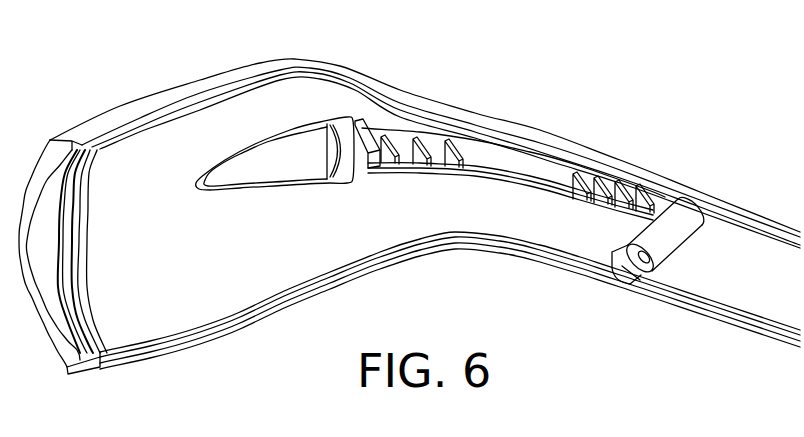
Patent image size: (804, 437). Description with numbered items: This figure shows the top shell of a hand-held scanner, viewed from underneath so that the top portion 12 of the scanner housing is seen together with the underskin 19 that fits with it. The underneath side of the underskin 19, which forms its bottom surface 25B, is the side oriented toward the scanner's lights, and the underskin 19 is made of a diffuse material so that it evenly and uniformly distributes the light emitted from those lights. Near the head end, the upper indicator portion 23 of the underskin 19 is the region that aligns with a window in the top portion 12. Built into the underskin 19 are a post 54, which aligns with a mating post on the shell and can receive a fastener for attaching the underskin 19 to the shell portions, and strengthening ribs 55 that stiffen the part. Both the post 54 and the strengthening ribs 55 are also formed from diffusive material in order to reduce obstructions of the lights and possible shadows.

The top portion 12 is at (115, 112).
The underskin 19 is at (272, 110).
The upper indicator portion 23 is at (272, 162).
The bottom surface 25B is at (426, 216).
The post 54 is at (675, 237).
The strengthening ribs 55 is at (532, 187).